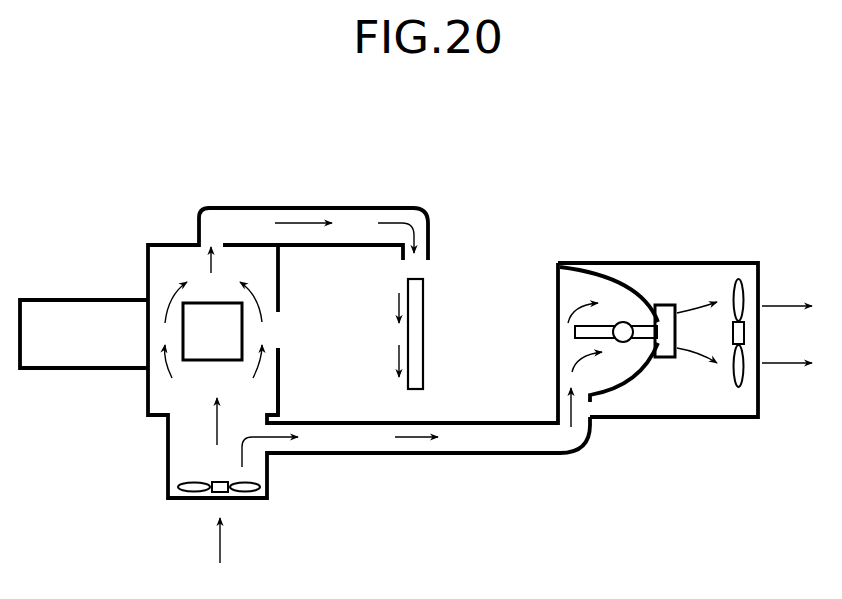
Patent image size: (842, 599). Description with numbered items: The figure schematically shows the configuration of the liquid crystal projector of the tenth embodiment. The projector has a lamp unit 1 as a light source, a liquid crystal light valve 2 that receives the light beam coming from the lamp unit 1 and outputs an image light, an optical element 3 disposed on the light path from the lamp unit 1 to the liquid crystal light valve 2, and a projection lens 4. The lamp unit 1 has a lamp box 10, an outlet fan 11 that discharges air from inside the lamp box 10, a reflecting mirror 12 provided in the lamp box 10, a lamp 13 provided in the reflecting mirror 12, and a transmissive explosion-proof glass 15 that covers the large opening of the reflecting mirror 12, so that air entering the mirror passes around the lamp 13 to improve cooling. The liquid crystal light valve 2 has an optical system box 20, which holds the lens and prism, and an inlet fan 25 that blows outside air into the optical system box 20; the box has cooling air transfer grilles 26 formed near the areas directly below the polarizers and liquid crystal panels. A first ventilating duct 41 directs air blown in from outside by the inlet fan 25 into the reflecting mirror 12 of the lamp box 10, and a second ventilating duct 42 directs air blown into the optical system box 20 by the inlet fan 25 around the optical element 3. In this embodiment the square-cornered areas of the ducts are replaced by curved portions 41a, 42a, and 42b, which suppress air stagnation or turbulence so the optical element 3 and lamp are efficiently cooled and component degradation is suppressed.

The lamp unit 1 is at (655, 420).
The liquid crystal light valve 2 is at (148, 428).
The optical element 3 is at (424, 305).
The projection lens 4 is at (80, 312).
The lamp box 10 is at (713, 418).
The outlet fan 11 is at (733, 292).
The reflecting mirror 12 is at (625, 282).
The lamp 13 is at (572, 333).
The transmissive explosion-proof glass 15 is at (558, 308).
The optical system box 20 is at (279, 298).
The inlet fan 25 is at (247, 495).
The cooling air transfer grilles 26 is at (203, 247).
The first ventilating duct 41 is at (452, 455).
The curved portion 41a is at (582, 445).
The second ventilating duct 42 is at (258, 207).
The curved portion 42a is at (202, 213).
The curved portion 42b is at (427, 208).